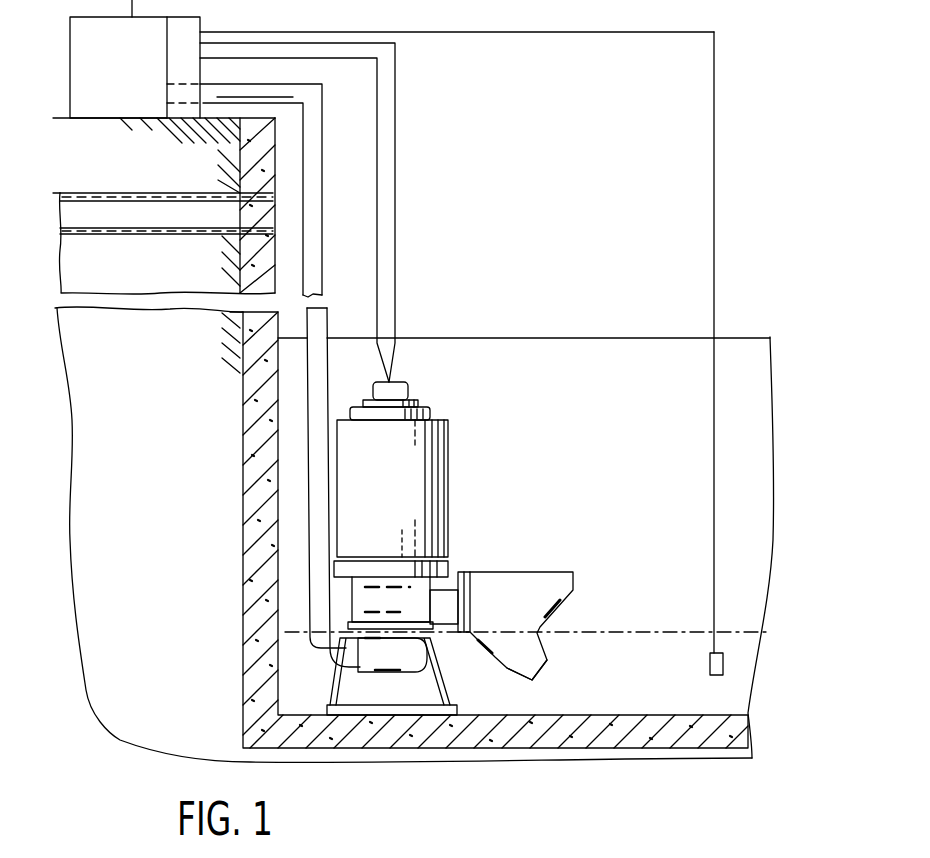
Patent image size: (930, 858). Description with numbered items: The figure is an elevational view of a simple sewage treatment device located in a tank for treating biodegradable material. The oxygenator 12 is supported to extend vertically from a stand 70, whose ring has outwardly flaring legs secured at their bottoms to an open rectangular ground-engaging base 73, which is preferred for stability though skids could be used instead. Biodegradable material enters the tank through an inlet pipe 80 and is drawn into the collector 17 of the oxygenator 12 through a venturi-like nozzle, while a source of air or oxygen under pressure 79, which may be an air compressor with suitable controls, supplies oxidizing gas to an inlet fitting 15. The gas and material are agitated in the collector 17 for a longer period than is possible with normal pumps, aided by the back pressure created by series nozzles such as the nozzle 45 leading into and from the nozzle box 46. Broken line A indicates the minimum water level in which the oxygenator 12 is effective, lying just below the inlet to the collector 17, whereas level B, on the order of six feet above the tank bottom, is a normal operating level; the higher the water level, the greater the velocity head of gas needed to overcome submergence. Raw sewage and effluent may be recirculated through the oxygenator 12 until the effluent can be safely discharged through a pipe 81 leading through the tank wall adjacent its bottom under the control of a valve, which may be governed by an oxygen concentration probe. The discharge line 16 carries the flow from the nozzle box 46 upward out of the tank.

The oxygenator 12 is at (450, 415).
The inlet fitting 15 is at (363, 675).
The discharge pipe 16 is at (327, 190).
The collector 17 is at (353, 595).
The nozzle 45 is at (531, 680).
The nozzle box 46 is at (578, 588).
The stand 70 is at (453, 685).
The base 73 is at (420, 688).
The source of air or oxygen under pressure 79 is at (132, 102).
The inlet pipe 80 is at (183, 223).
The pipe 81 is at (723, 675).
The minimum water level A is at (661, 593).
The normal water level B is at (660, 336).